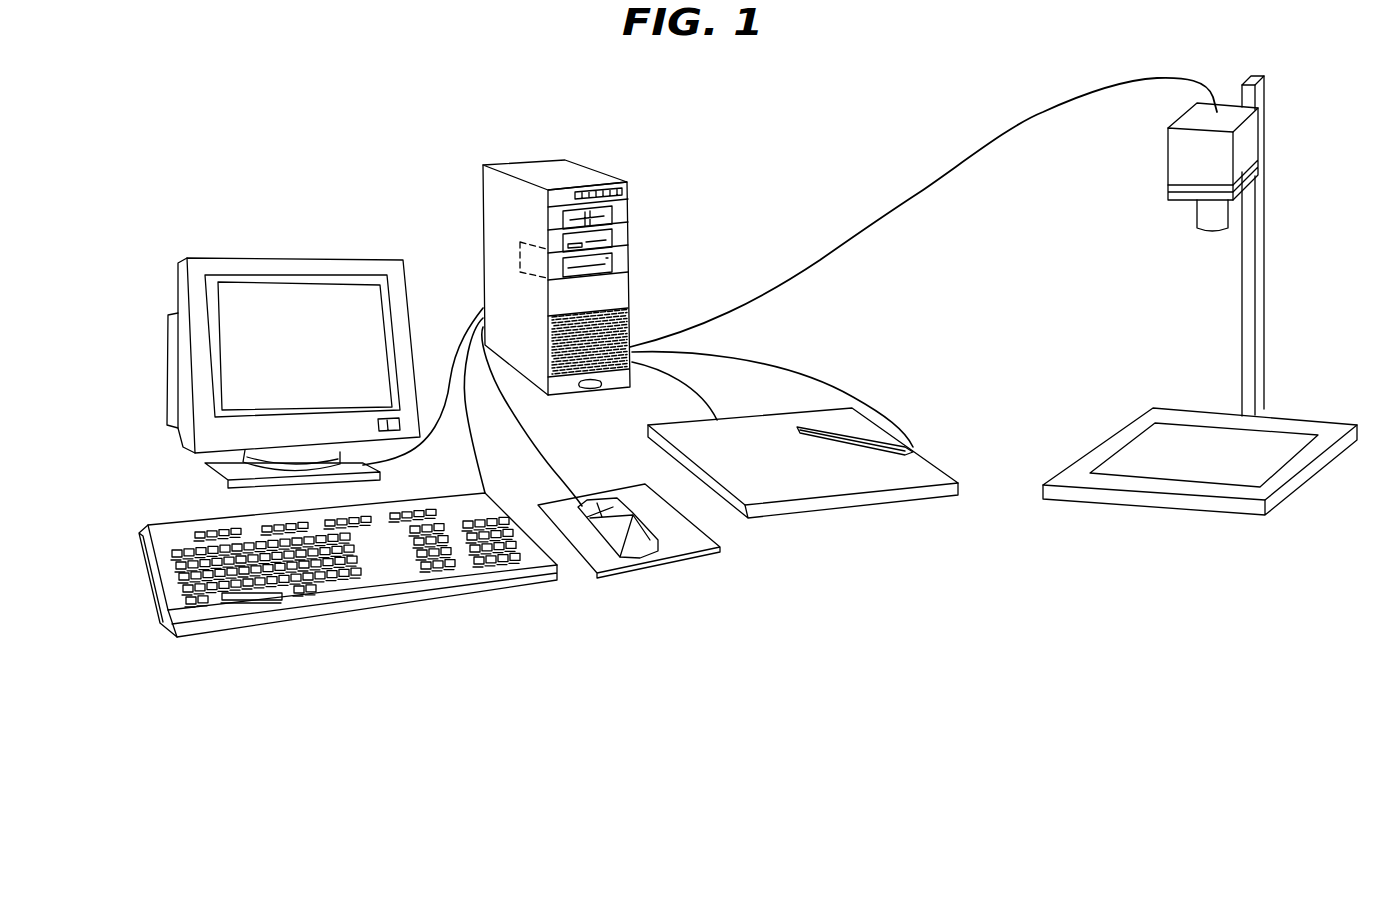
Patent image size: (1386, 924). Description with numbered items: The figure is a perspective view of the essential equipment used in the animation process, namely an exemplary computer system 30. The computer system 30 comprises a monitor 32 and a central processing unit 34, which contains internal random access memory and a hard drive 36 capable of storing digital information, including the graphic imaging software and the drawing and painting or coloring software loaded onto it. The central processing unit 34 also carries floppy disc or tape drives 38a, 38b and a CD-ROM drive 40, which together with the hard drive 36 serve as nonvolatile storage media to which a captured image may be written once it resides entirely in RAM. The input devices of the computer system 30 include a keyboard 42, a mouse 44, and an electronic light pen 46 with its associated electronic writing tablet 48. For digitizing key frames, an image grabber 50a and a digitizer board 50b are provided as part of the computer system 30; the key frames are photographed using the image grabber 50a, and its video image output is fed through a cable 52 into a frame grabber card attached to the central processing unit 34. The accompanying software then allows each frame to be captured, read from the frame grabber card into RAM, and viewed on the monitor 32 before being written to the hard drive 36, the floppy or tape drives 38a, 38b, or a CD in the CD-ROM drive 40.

The computer system 30 is at (408, 163).
The monitor 32 is at (267, 290).
The central processing unit 34 is at (537, 163).
The hard drive 36 is at (520, 245).
The floppy disc or tape drive 38a is at (617, 208).
The floppy disc or tape drive 38b is at (618, 243).
The CD-ROM drive 40 is at (620, 275).
The keyboard 42 is at (395, 606).
The mouse 44 is at (635, 538).
The electronic light pen 46 is at (842, 445).
The electronic writing tablet 48 is at (872, 503).
The image grabber 50a is at (1168, 188).
The digitizer board 50b is at (1273, 458).
The cable 52 is at (1043, 110).